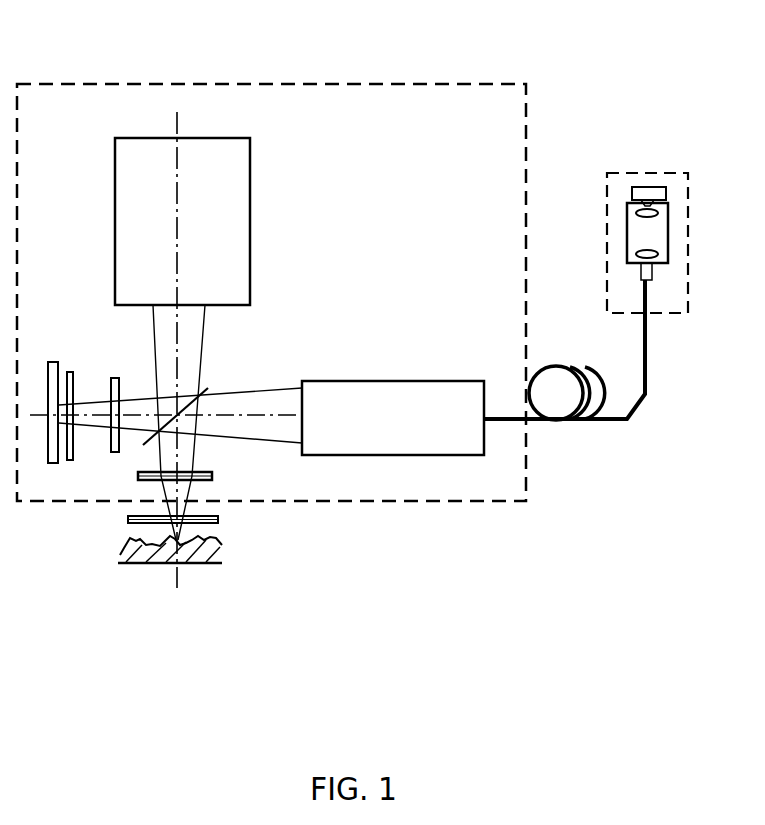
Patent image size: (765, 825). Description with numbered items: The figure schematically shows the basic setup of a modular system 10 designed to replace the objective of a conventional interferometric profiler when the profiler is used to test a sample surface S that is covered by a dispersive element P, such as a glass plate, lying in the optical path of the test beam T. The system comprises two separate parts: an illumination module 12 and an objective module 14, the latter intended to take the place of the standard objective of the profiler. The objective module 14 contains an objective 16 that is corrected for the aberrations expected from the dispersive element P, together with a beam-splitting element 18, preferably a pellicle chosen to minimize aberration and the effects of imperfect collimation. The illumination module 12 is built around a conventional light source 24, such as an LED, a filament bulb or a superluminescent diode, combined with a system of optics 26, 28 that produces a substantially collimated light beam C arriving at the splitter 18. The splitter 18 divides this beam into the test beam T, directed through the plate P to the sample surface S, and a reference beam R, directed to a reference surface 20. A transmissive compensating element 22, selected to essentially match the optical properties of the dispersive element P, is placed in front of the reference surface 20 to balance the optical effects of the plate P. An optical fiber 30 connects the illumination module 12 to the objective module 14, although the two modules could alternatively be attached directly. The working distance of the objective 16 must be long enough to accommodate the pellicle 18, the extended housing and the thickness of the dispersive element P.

The modular system 10 is at (542, 86).
The illumination module 12 is at (690, 200).
The objective module 14 is at (527, 187).
The objective 16 is at (238, 193).
The beam-splitting element 18 is at (203, 392).
The reference surface 20 is at (48, 466).
The transmissive compensating element 22 is at (68, 372).
The light source 24 is at (650, 192).
The optics 26 is at (668, 242).
The optics 28 is at (394, 400).
The optical fiber 30 is at (637, 408).
The reference beam R is at (143, 415).
The test beam T is at (176, 452).
The collimated light beam C is at (247, 417).
The dispersive element P is at (213, 516).
The sample surface S is at (223, 535).